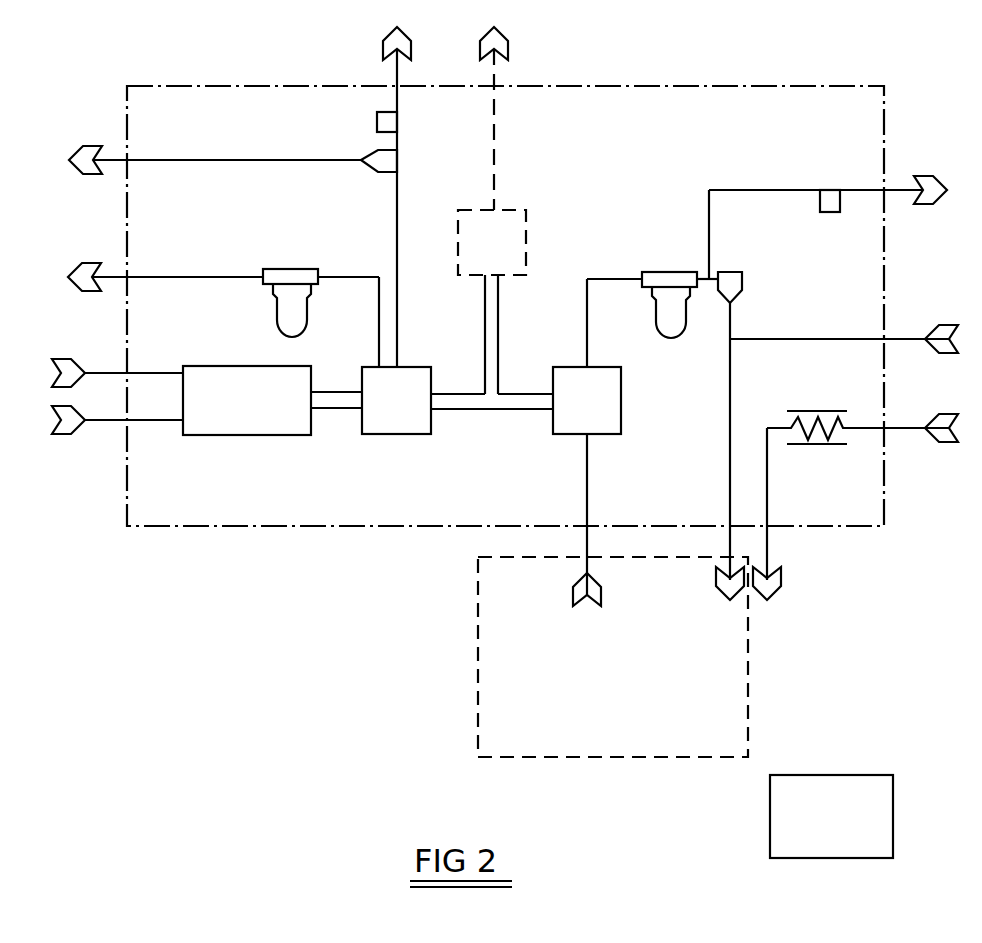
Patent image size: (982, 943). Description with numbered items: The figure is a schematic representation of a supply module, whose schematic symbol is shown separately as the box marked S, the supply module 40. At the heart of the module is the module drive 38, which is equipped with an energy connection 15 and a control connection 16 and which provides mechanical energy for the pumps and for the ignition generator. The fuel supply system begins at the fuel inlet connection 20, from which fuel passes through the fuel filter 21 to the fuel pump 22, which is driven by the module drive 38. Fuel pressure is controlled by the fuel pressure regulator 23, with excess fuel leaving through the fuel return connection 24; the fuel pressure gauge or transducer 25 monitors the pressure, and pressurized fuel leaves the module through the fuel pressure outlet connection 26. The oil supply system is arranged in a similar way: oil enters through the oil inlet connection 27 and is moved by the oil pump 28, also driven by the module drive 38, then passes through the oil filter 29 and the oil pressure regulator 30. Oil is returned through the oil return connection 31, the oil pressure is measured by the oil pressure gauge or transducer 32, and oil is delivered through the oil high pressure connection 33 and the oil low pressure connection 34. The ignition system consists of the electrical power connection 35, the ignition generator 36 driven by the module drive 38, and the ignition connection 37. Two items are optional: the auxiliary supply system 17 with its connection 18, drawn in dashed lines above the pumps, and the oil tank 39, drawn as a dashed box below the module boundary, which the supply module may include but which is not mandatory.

The energy connection 15 is at (64, 360).
The control connection 16 is at (66, 436).
The auxiliary supply system 17 is at (526, 230).
The connection 18 is at (509, 50).
The fuel inlet connection 20 is at (80, 265).
The fuel filter 21 is at (292, 269).
The fuel pump 22 is at (380, 436).
The fuel pressure regulator 23 is at (368, 172).
The fuel return connection 24 is at (84, 150).
The fuel pressure gauge or transducer 25 is at (377, 122).
The fuel pressure outlet connection 26 is at (411, 50).
The oil inlet connection 27 is at (587, 606).
The oil pump 28 is at (622, 413).
The oil filter 29 is at (668, 272).
The oil pressure regulator 30 is at (742, 275).
The oil return connection 31 is at (724, 598).
The oil pressure gauge or transducer 32 is at (828, 190).
The oil high pressure connection 33 is at (925, 178).
The oil low pressure connection 34 is at (938, 326).
The electrical power connection 35 is at (944, 416).
The ignition generator 36 is at (820, 446).
The ignition connection 37 is at (782, 589).
The module drive 38 is at (214, 436).
The oil tank 39 is at (478, 651).
The supply module 40 is at (803, 858).